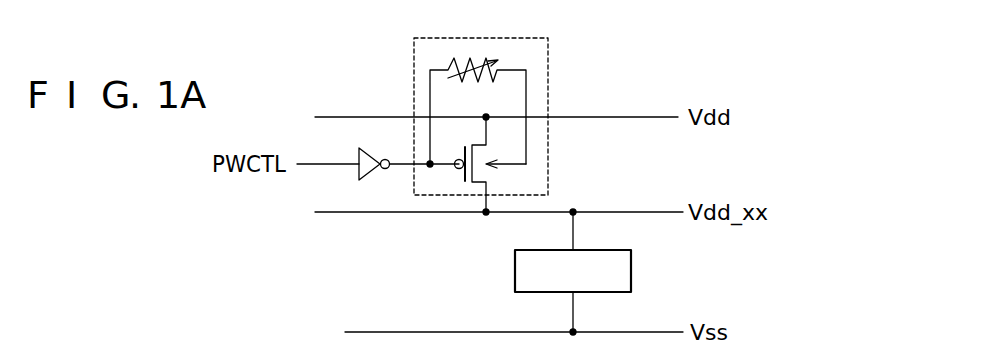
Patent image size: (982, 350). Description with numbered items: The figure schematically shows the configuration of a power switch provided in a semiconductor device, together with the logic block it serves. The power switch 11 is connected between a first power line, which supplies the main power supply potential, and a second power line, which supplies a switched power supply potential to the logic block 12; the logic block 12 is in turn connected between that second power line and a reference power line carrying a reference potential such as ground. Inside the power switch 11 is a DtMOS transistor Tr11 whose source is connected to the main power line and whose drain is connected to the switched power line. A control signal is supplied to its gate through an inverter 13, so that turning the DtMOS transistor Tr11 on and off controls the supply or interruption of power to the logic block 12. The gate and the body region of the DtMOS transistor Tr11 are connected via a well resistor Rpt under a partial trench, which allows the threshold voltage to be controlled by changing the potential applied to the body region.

The power switch 11 is at (548, 170).
The DtMOS transistor Tr11 is at (494, 148).
The well resistor Rpt is at (497, 53).
The logic block 12 is at (631, 270).
The inverter 13 is at (357, 180).